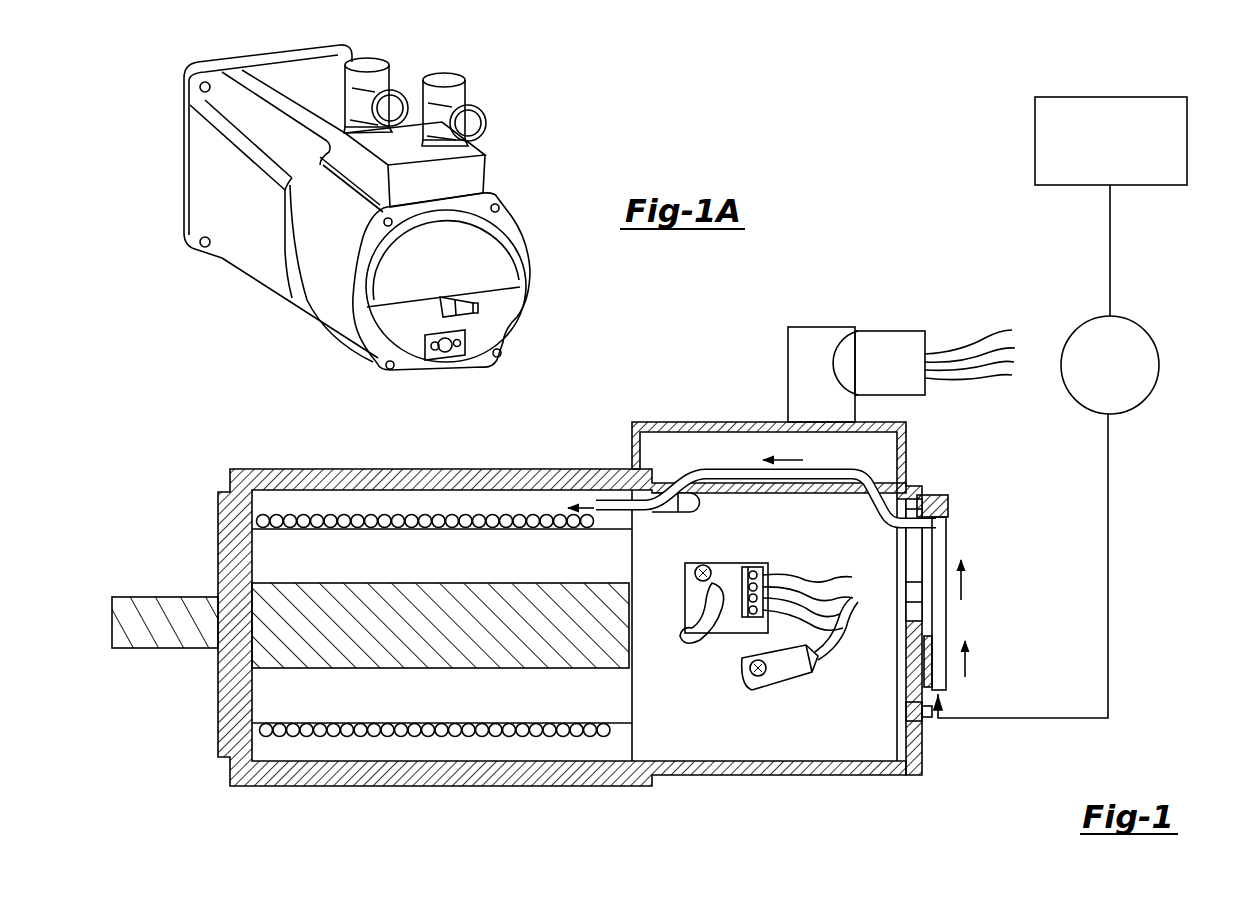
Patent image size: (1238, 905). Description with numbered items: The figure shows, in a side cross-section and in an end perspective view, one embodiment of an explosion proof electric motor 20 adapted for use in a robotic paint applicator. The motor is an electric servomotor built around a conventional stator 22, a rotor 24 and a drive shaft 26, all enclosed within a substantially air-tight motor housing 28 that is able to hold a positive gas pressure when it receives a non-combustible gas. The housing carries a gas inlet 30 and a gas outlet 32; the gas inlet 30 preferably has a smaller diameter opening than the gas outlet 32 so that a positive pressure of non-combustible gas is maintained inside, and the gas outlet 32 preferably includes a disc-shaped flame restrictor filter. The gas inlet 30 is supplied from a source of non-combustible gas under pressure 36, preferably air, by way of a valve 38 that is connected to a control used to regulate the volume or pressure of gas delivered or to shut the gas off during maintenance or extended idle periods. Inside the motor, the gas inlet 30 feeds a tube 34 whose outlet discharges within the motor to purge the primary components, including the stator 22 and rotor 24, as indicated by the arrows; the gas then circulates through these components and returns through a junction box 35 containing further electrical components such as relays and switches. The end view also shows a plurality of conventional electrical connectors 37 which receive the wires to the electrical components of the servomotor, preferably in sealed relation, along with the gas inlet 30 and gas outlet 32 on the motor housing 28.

In FIG. 1, the explosion proof electric motor 20 is at (374, 462).
In FIG. 1A, the explosion proof electric motor 20 is at (238, 316).
In FIG. 1, the stator 22 is at (318, 738).
In FIG. 1, the rotor 24 is at (465, 512).
In FIG. 1, the drive shaft 26 is at (125, 627).
In FIG. 1, the motor housing 28 is at (497, 773).
In FIG. 1, the gas inlet 30 is at (944, 694).
In FIG. 1A, the gas inlet 30 is at (474, 307).
In FIG. 1, the gas outlet 32 is at (932, 721).
In FIG. 1A, the gas outlet 32 is at (450, 350).
In FIG. 1, the tube 34 is at (867, 525).
In FIG. 1A, the tube 34 is at (458, 297).
In FIG. 1, the junction box 35 is at (805, 752).
In FIG. 1, the source of non-combustible gas under pressure 36 is at (1097, 157).
In FIG. 1, the electrical connectors 37 is at (793, 360).
In FIG. 1A, the electrical connectors 37 is at (373, 63).
In FIG. 1, the valve 38 is at (1160, 360).